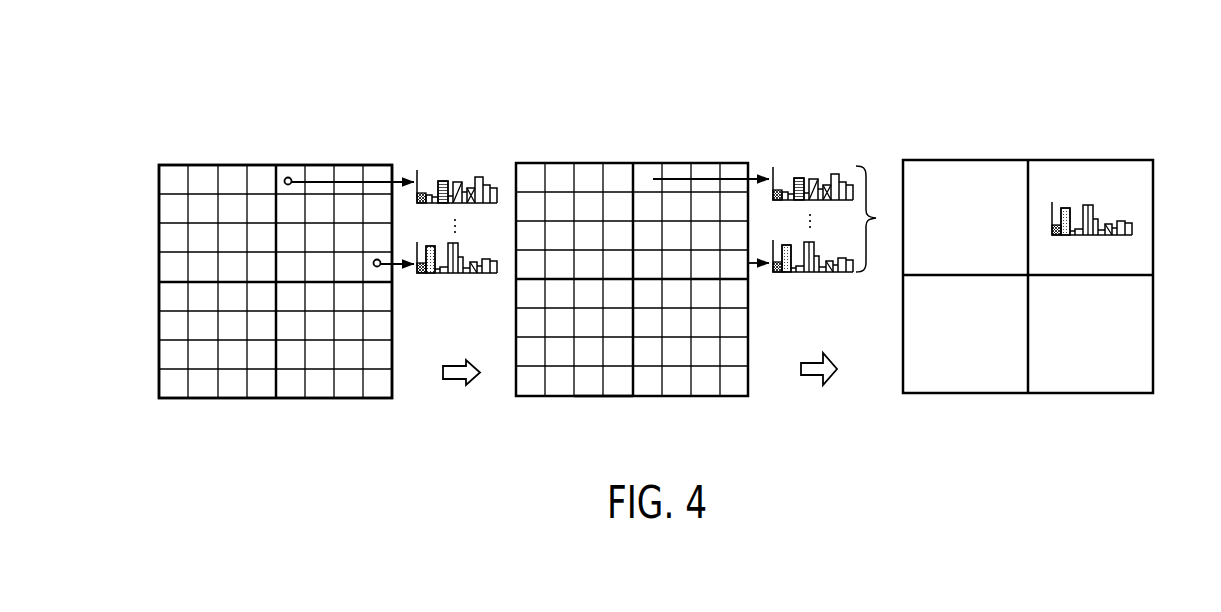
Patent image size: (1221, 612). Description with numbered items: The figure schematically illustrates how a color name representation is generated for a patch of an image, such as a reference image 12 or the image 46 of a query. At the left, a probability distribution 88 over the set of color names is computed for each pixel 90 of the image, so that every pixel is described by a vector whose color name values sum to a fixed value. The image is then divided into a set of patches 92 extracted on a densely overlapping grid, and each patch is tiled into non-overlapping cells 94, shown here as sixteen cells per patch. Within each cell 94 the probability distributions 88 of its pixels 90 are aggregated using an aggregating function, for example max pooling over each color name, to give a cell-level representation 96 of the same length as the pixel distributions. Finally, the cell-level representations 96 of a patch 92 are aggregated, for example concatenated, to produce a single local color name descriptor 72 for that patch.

The reference image 12 is at (212, 124).
The image 46 is at (275, 281).
The pixel 90 is at (288, 170).
The probability distribution 88 is at (435, 165).
The patch 92 is at (588, 161).
The cell 94 is at (618, 385).
The cell-level representation 96 is at (790, 164).
The LCN descriptor 72 is at (1070, 198).